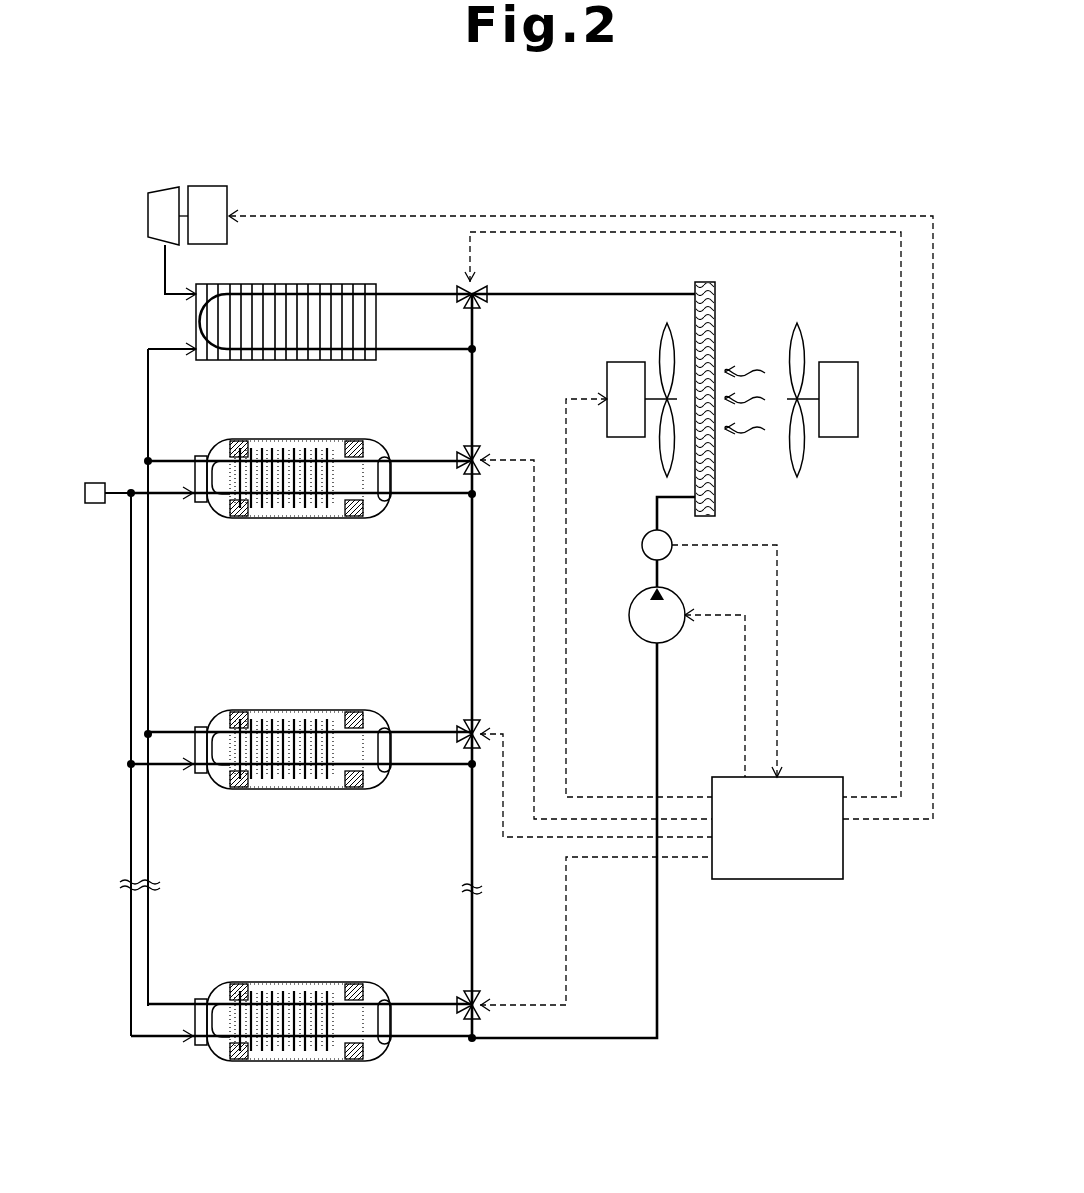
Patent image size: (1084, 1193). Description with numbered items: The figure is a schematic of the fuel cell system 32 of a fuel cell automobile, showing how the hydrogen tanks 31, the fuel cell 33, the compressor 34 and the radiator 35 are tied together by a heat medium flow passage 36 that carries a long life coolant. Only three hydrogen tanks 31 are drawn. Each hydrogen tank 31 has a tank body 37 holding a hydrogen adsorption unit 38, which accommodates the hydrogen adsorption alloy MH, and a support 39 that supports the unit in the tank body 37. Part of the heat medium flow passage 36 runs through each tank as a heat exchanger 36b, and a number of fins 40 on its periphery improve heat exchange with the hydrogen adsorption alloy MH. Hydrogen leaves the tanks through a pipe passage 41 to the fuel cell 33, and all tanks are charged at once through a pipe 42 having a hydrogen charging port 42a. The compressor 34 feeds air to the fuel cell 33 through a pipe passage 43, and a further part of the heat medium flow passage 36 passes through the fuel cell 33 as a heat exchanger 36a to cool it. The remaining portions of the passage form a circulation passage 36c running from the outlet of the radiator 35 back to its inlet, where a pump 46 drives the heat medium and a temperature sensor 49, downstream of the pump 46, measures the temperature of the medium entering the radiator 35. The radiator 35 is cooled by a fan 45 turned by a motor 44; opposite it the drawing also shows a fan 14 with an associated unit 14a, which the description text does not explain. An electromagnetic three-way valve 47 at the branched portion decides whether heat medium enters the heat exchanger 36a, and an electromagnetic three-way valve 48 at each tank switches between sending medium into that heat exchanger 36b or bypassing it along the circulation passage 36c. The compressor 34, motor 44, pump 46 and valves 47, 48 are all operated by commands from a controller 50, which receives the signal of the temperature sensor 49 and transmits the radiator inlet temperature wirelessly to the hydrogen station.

The fan 14 is at (822, 316).
The fan motor 14a is at (840, 362).
The hydrogen tank 31 is at (207, 520).
The fuel cell system 32 is at (712, 203).
The fuel cell 33 is at (370, 284).
The compressor 34 is at (207, 186).
The radiator 35 is at (715, 497).
The heat medium flow passage 36 is at (626, 293).
The heat exchanger 36a is at (291, 294).
The heat exchanger 36b is at (300, 450).
The circulation passage 36c is at (470, 621).
The tank body 37 is at (385, 518).
The hydrogen adsorption unit 38 is at (274, 512).
The support 39 is at (244, 517).
The fins 40 is at (278, 446).
The pipe passage 41 is at (148, 401).
The pipe 42 is at (131, 661).
The hydrogen charging port 42a is at (97, 504).
The pipe passage 43 is at (163, 262).
The motor 44 is at (607, 380).
The fan 45 is at (661, 352).
The pump 46 is at (672, 641).
The electromagnetic three-way valve 47 is at (469, 288).
The electromagnetic three-way valve 48 is at (463, 452).
The temperature sensor 49 is at (648, 534).
The controller 50 is at (835, 879).
The hydrogen adsorption alloy MH is at (337, 448).